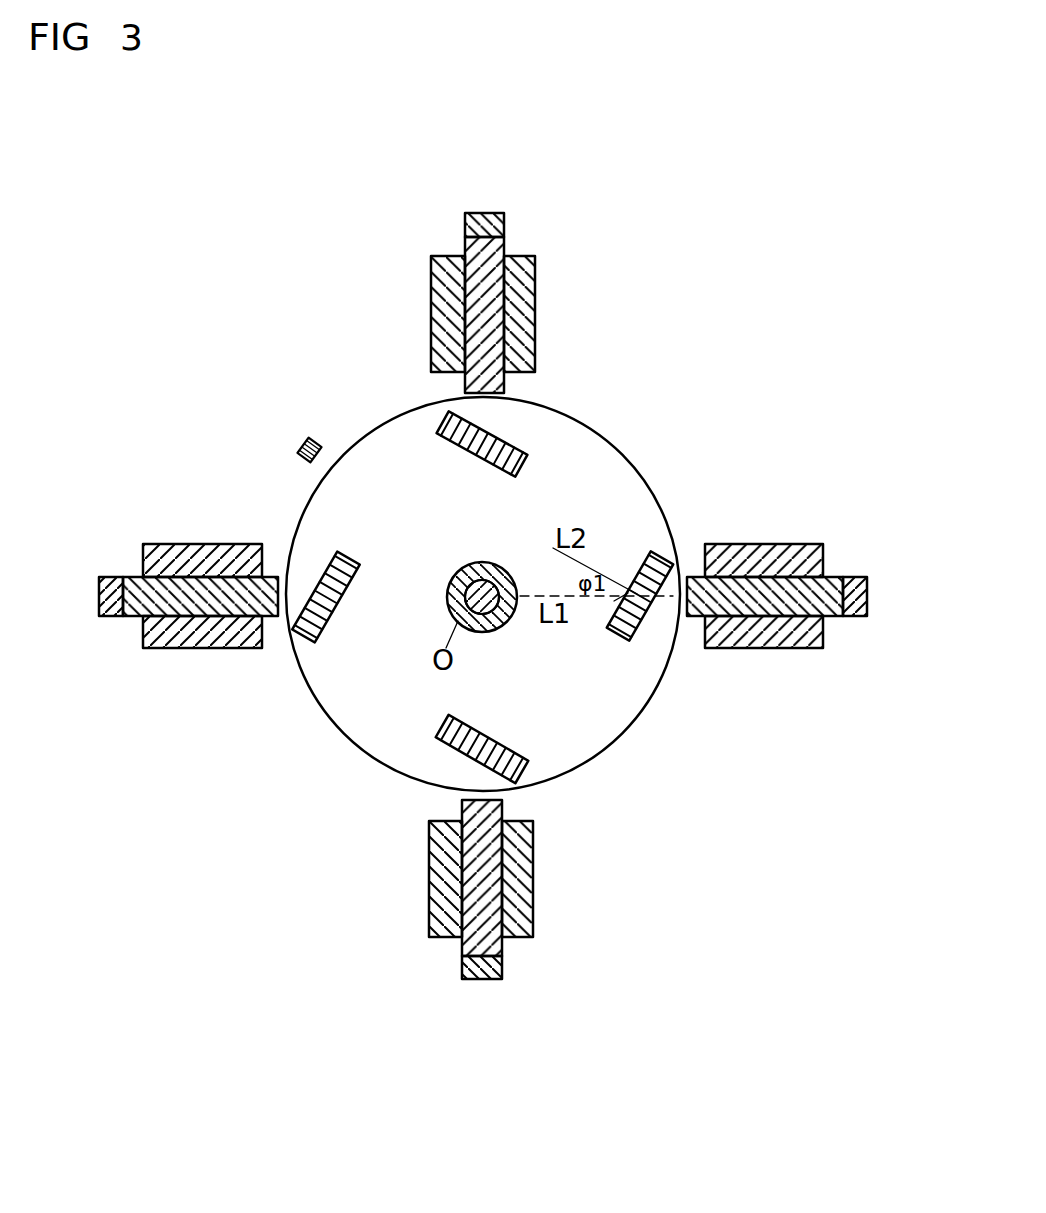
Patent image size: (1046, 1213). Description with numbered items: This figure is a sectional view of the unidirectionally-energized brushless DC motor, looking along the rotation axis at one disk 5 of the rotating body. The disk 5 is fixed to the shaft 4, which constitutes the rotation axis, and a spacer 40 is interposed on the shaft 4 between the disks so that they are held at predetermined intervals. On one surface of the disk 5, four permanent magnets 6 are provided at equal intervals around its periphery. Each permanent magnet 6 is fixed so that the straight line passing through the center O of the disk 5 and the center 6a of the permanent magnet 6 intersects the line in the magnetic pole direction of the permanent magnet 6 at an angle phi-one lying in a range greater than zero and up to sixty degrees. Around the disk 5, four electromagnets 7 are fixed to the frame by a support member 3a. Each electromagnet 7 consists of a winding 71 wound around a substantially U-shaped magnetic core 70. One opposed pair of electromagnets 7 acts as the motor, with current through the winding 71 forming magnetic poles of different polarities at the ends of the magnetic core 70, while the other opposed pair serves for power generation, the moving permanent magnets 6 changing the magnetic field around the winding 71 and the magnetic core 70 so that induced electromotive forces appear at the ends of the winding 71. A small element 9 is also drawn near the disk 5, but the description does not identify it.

The support member 3a is at (481, 212).
The shaft 4 is at (485, 566).
The spacer 40 is at (454, 584).
The disk 5 is at (603, 480).
The permanent magnet 6 is at (349, 553).
The center of the permanent magnet 6a is at (614, 601).
The electromagnet 7 is at (499, 604).
The magnetic core 70 is at (504, 247).
The winding 71 is at (535, 317).
The position sensor 9 is at (304, 440).